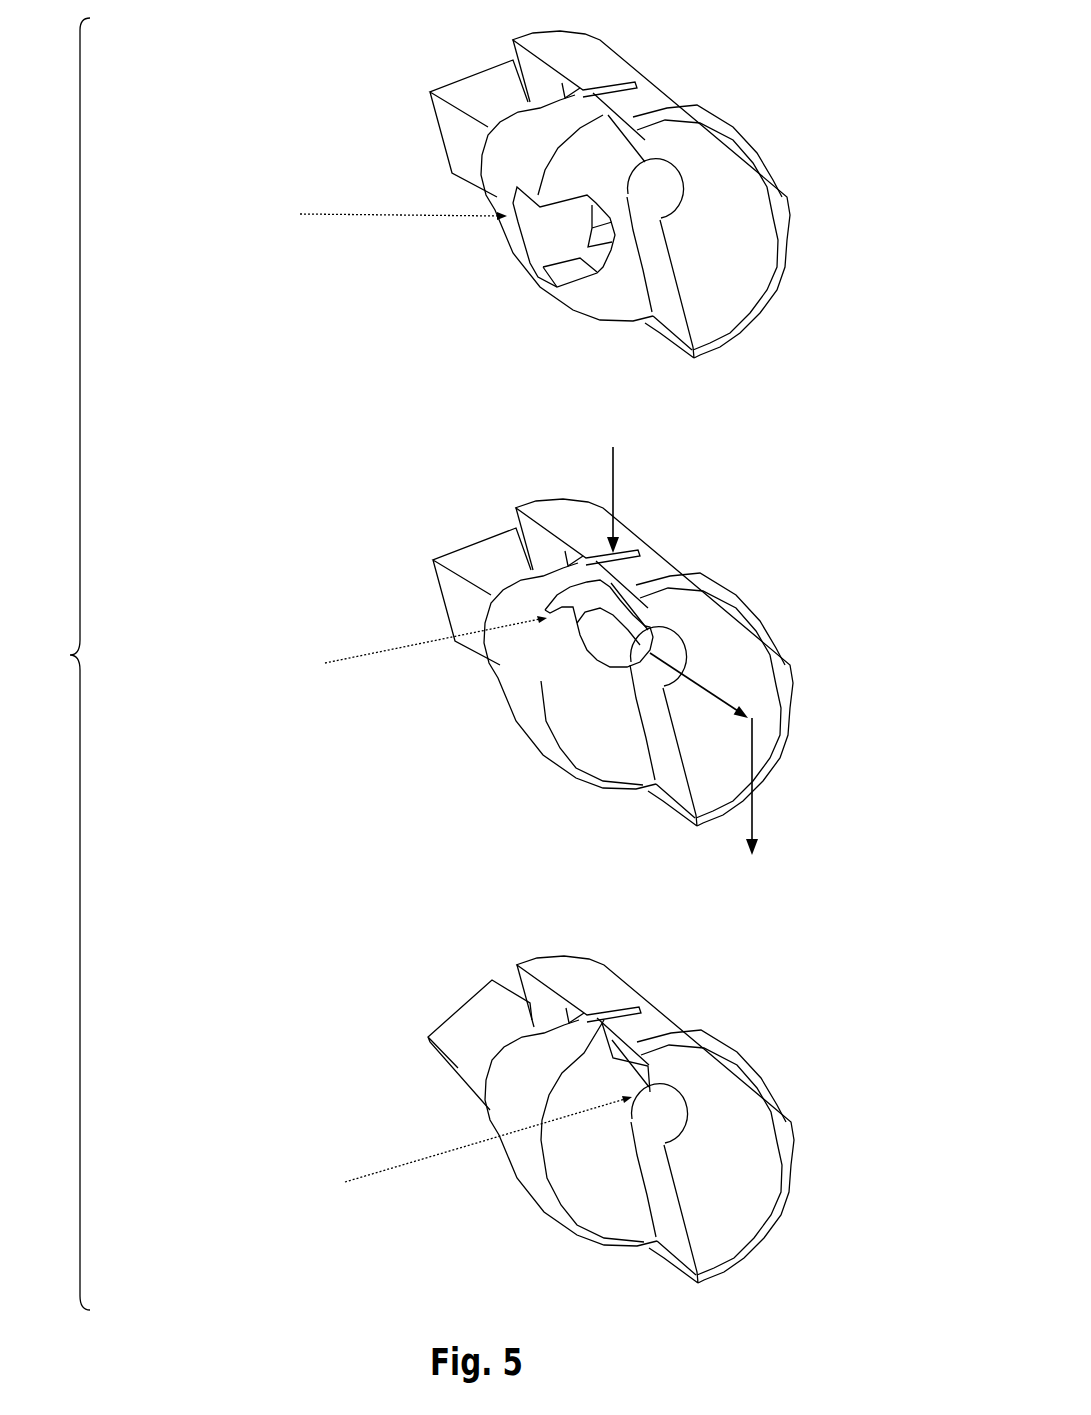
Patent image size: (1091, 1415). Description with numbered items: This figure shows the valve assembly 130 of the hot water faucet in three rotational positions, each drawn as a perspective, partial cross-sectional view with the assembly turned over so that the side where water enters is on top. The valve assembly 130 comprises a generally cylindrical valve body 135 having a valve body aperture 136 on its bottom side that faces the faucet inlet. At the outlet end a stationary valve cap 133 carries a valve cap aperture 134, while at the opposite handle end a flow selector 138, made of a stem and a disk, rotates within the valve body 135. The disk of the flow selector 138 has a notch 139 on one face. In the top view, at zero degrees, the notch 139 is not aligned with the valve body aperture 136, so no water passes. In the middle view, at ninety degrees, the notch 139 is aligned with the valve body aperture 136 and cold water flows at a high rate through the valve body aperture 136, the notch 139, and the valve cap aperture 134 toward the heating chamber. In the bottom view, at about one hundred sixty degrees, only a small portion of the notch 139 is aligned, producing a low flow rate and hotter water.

The valve assembly 130 is at (440, 664).
The valve cap 133 is at (753, 255).
The valve cap aperture 134 is at (672, 180).
The valve body 135 is at (693, 112).
The valve body aperture 136 is at (627, 79).
The flow selector 138 is at (470, 73).
The notch 139 is at (533, 250).